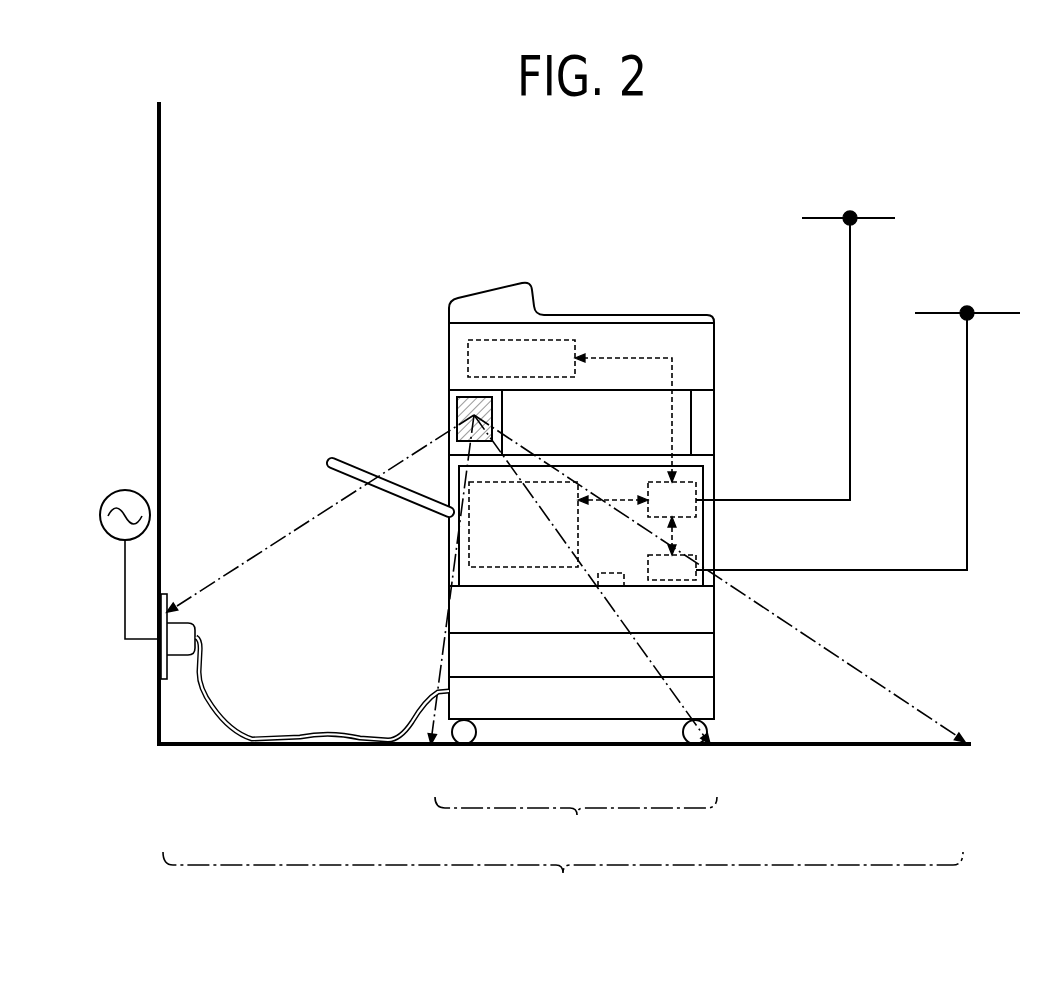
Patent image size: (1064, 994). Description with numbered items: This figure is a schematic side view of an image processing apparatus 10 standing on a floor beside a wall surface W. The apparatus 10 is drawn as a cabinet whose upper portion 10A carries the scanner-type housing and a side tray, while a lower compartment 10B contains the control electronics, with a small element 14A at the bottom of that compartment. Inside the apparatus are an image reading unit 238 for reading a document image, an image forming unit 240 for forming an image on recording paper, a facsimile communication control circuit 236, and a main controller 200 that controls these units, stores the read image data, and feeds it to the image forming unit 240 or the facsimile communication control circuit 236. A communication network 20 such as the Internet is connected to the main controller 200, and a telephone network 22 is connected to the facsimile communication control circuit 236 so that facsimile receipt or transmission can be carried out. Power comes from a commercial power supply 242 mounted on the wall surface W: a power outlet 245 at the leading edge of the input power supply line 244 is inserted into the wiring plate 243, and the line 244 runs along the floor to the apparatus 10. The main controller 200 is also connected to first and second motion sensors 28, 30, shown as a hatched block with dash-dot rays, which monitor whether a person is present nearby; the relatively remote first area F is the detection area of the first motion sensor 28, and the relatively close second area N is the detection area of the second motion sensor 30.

The image processing apparatus 10 is at (455, 256).
The apparatus main body 10A is at (455, 482).
The control unit 10B is at (714, 522).
The speaker 14A is at (611, 588).
The communication network 20 is at (822, 218).
The telephone network 22 is at (1010, 316).
The first motion sensor 28 is at (566, 570).
The second motion sensor 30 is at (457, 412).
The main controller 200 is at (698, 486).
The facsimile communication control circuit 236 is at (688, 584).
The image reading unit 238 is at (468, 362).
The image forming unit 240 is at (470, 567).
The commercial power supply 242 is at (145, 504).
The wiring plate 243 is at (176, 598).
The input power supply line 244 is at (225, 712).
The power outlet 245 is at (180, 634).
The wall surface W is at (161, 278).
The first area F is at (564, 826).
The second area N is at (576, 824).